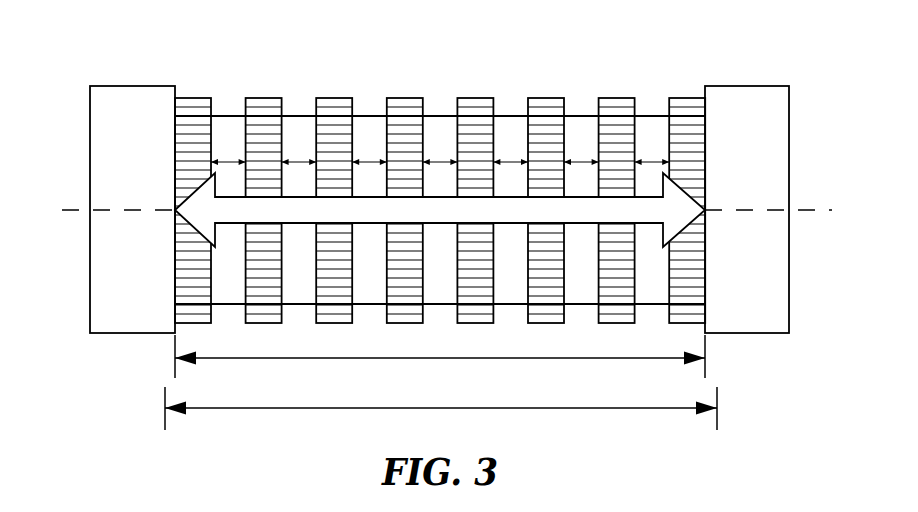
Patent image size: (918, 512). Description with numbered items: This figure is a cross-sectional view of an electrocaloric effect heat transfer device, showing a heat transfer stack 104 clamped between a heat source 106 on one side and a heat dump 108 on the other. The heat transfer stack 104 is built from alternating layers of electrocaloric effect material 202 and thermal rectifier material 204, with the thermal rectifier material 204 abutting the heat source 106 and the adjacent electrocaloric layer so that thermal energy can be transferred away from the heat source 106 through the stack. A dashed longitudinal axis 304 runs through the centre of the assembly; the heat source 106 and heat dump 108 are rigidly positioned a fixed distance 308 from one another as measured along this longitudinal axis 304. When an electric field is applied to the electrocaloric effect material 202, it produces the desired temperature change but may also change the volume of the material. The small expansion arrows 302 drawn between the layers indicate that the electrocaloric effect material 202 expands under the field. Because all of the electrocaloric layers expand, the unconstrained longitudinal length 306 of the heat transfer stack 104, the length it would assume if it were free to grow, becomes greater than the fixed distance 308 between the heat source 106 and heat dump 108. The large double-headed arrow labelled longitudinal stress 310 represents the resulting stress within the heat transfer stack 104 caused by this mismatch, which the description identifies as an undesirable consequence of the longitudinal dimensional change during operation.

The heat transfer stack 104 is at (734, 37).
The heat source 106 is at (106, 169).
The heat dump 108 is at (768, 168).
The electrocaloric effect material 202 is at (377, 125).
The thermal rectifier material 204 is at (543, 108).
The expansion arrows 302 is at (443, 161).
The longitudinal axis 304 is at (82, 213).
The unconstrained longitudinal length 306 is at (462, 430).
The fixed distance 308 is at (555, 354).
The longitudinal stress 310 is at (585, 218).